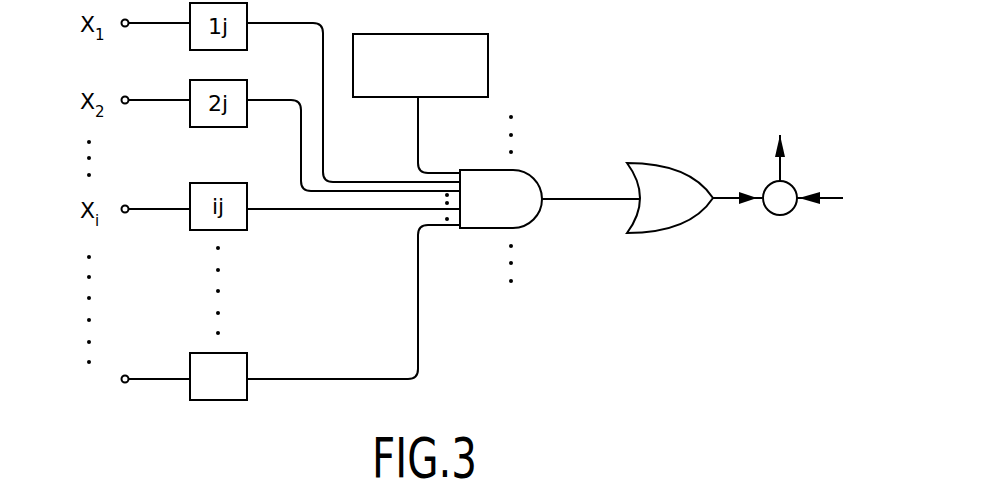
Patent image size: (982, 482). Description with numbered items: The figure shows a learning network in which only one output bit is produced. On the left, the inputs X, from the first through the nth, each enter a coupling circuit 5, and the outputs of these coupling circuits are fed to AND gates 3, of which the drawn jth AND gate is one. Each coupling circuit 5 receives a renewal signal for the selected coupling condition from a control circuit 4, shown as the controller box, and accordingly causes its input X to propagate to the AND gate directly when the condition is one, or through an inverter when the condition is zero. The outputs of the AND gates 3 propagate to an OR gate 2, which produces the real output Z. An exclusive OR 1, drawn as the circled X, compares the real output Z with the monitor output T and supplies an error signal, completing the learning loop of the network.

The exclusive OR 1 is at (797, 183).
The OR gate 2 is at (694, 222).
The AND gates 3 is at (550, 227).
The control circuit 4 is at (420, 88).
The coupling circuit 5 is at (270, 336).